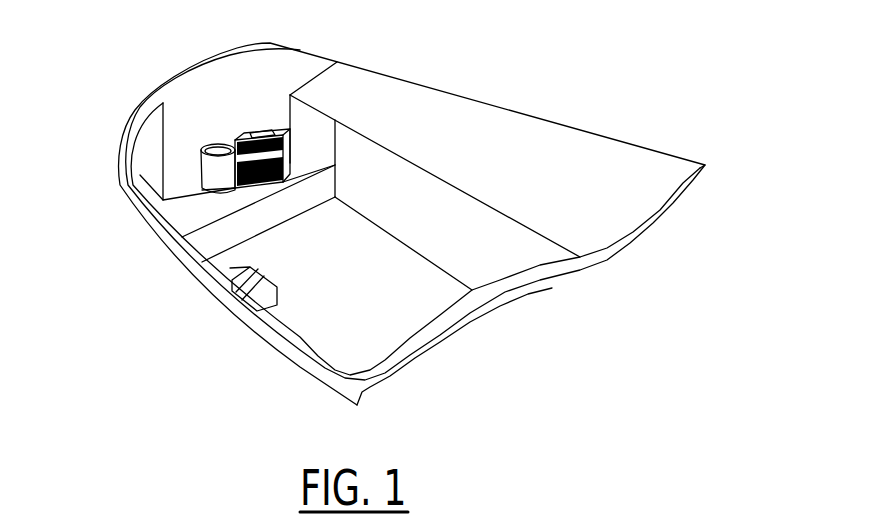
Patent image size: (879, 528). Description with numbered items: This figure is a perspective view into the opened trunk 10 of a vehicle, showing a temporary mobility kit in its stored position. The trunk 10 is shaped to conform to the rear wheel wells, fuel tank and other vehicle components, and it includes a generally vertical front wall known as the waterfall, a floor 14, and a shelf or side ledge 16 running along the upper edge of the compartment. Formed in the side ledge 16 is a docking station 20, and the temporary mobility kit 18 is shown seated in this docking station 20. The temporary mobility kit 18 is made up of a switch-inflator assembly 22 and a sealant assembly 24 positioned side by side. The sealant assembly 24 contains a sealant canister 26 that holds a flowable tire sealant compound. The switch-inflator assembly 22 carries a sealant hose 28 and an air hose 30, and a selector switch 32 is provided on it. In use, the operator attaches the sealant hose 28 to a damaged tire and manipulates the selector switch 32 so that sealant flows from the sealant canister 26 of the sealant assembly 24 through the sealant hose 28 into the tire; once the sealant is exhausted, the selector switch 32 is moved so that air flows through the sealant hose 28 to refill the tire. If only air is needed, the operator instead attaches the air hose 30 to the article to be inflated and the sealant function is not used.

The vehicle trunk 10 is at (698, 78).
The floor 14 is at (500, 335).
The side ledge 16 is at (190, 217).
The temporary mobility kit 18 is at (176, 158).
The docking station 20 is at (222, 252).
The switch-inflator assembly 22 is at (313, 37).
The sealant assembly 24 is at (215, 146).
The sealant canister 26 is at (218, 178).
The sealant hose 28 is at (447, 65).
The air hose 30 is at (445, 152).
The selector switch 32 is at (384, 54).